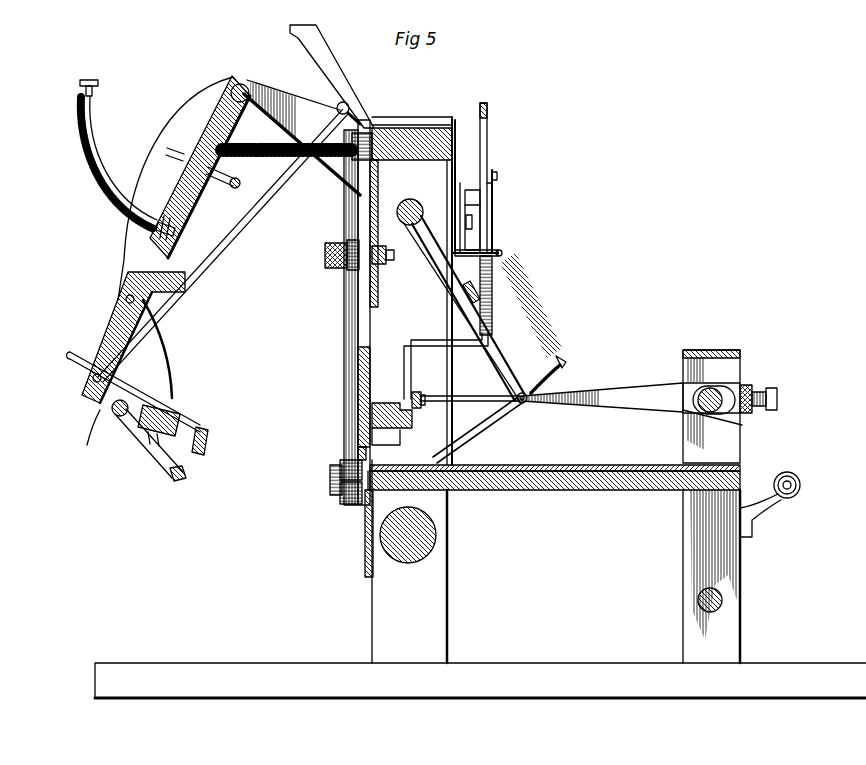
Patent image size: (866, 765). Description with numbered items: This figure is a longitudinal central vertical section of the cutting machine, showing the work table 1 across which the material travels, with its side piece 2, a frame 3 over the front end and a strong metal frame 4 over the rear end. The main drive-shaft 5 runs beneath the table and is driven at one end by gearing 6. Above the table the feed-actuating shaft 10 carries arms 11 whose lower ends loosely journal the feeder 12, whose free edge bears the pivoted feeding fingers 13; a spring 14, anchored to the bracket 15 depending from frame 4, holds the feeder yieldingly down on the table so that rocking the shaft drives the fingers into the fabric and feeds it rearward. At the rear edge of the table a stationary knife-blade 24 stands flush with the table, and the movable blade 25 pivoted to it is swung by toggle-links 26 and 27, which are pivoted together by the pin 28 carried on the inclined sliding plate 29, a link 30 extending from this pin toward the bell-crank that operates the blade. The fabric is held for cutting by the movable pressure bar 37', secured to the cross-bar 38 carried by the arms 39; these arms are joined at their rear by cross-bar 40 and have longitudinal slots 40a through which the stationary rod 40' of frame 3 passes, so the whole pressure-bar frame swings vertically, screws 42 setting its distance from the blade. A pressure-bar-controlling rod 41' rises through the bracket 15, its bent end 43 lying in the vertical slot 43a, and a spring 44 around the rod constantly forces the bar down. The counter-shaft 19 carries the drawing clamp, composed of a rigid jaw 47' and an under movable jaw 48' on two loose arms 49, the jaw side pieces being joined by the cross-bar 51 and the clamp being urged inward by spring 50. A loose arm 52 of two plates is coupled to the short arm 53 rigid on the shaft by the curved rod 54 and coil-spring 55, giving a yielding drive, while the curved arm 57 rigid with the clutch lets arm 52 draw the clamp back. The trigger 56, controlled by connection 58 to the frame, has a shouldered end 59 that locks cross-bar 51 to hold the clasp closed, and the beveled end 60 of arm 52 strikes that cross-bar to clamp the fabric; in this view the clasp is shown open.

The work table 1 is at (560, 470).
The side piece 2 is at (480, 559).
The frame 3 is at (740, 376).
The metal frame 4 is at (418, 280).
The main drive-shaft 5 is at (437, 535).
The gearing 6 is at (499, 245).
The feed-actuating shaft 10 is at (412, 205).
The arms 11 is at (445, 288).
The feeder 12 is at (480, 432).
The feeding fingers 13 is at (445, 470).
The spring 14 is at (550, 322).
The bracket 15 is at (473, 256).
The counter-shaft 19 is at (249, 90).
The stationary knife-blade 24 is at (376, 472).
The movable blade 25 is at (362, 425).
The toggle-link 26 is at (348, 320).
The toggle-link 27 is at (360, 205).
The pin 28 is at (386, 258).
The inclined sliding plate 29 is at (378, 302).
The link 30 is at (327, 258).
The pressure bar 37' is at (407, 438).
The cross-bar 38 is at (390, 400).
The arms 39 is at (551, 394).
The cross-bar 40 is at (776, 390).
The stationary rod 40' is at (712, 433).
The longitudinal slots 40a is at (700, 394).
The pressure-bar-controlling rod 41' is at (465, 365).
The screws 42 is at (778, 402).
The bent end 43 is at (463, 182).
The vertical slot 43a is at (510, 150).
The spring 44 is at (490, 318).
The rigid jaw 47' is at (221, 441).
The movable jaw 48' is at (160, 455).
The loose arms 49 is at (150, 356).
The spring 50 is at (280, 152).
The cross-bar 51 is at (116, 416).
The arm 52 is at (147, 258).
The short arm 53 is at (192, 196).
The curved rod 54 is at (93, 82).
The coil-spring 55 is at (104, 150).
The trigger 56 is at (132, 302).
The curved arm 57 is at (76, 363).
The connection 58 is at (250, 210).
The shouldered end 59 is at (92, 405).
The beveled end 60 is at (84, 440).